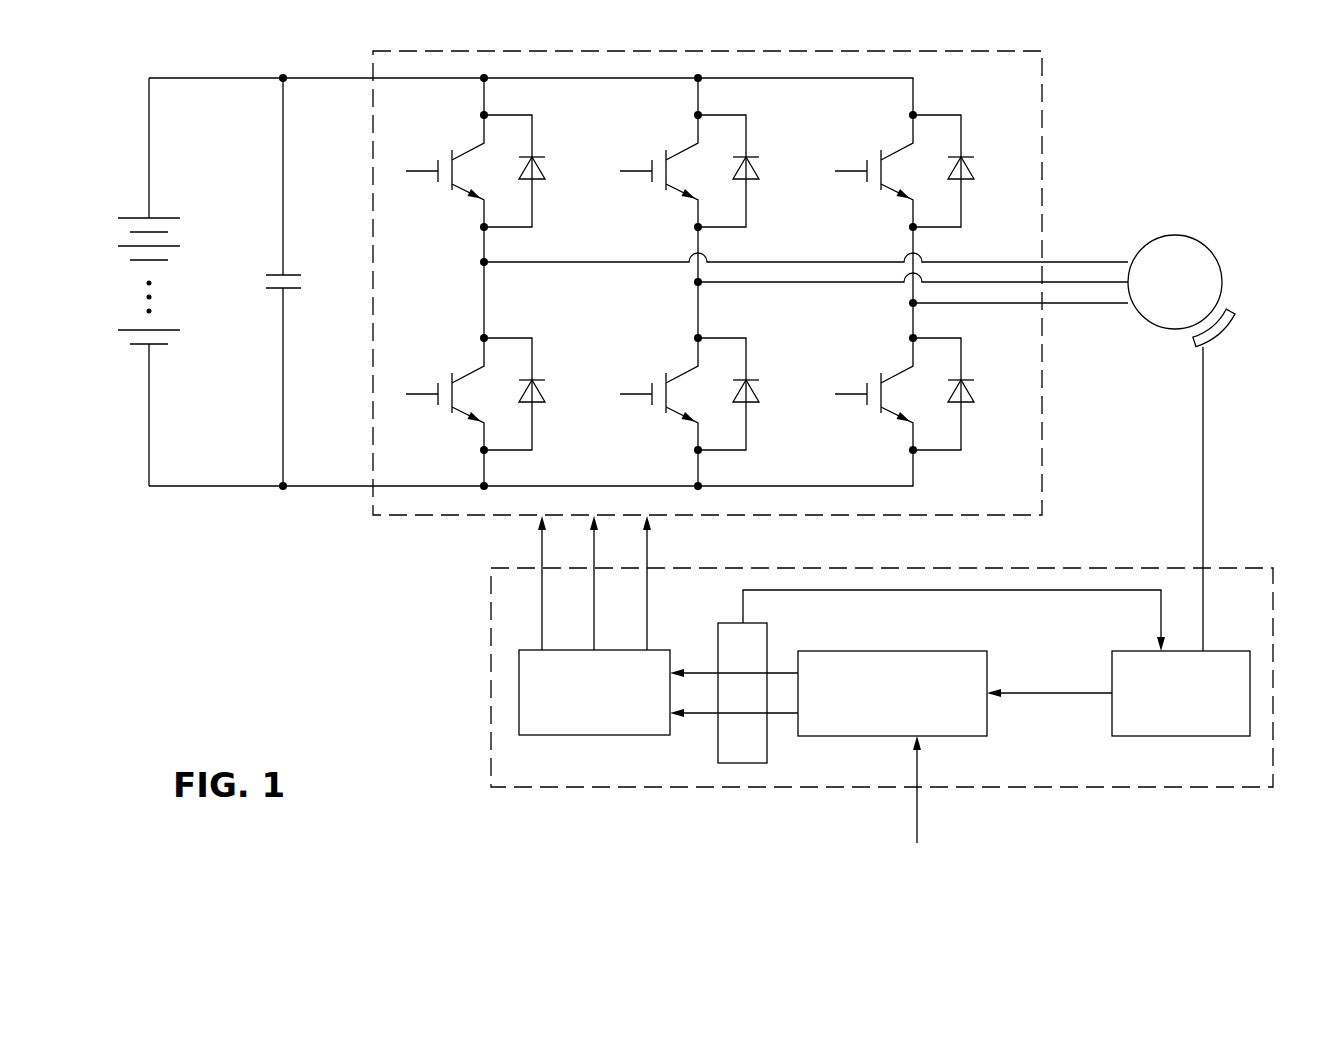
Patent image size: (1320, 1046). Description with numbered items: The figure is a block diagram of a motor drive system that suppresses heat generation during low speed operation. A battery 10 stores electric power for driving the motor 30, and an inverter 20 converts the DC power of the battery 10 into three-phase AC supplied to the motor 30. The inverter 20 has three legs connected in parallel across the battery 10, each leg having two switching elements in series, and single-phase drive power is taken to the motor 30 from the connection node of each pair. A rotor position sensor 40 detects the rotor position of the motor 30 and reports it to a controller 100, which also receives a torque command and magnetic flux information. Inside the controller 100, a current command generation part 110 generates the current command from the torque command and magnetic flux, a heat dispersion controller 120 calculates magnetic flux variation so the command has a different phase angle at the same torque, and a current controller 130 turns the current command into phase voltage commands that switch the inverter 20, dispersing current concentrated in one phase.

The battery 10 is at (131, 218).
The inverter 20 is at (1042, 104).
The motor 30 is at (1175, 236).
The rotor position sensor 40 is at (1226, 332).
The controller 100 is at (828, 695).
The current command generation part 110 is at (812, 736).
The heat dispersion controller 120 is at (1170, 736).
The current controller 130 is at (519, 702).